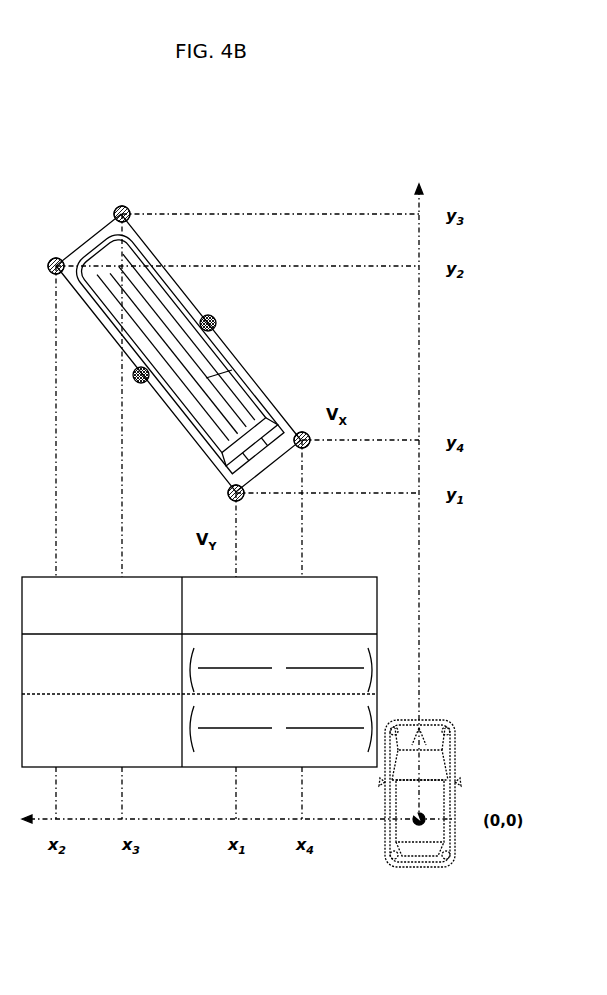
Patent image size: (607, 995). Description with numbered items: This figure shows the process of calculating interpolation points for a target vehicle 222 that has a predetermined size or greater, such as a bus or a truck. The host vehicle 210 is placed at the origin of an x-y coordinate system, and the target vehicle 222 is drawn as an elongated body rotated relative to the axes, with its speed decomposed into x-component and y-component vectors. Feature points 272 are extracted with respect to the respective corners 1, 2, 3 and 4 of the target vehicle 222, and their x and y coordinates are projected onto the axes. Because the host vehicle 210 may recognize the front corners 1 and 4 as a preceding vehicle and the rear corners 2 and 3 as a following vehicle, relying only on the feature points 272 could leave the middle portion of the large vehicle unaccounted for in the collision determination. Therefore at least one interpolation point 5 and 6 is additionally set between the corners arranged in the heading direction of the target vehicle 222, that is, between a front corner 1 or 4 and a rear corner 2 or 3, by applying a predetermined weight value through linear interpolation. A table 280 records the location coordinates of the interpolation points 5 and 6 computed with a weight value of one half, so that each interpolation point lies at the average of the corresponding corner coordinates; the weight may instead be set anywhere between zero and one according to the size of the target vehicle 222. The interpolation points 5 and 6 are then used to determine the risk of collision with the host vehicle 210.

The target vehicle 222 is at (238, 376).
The feature points 272 is at (114, 208).
The table 280 is at (357, 576).
The host vehicle 210 is at (446, 785).
The front corner 1 is at (237, 503).
The rear corner 2 is at (51, 277).
The rear corner 3 is at (131, 217).
The front corner 4 is at (308, 441).
The interpolation point 5 is at (135, 385).
The interpolation point 6 is at (216, 326).